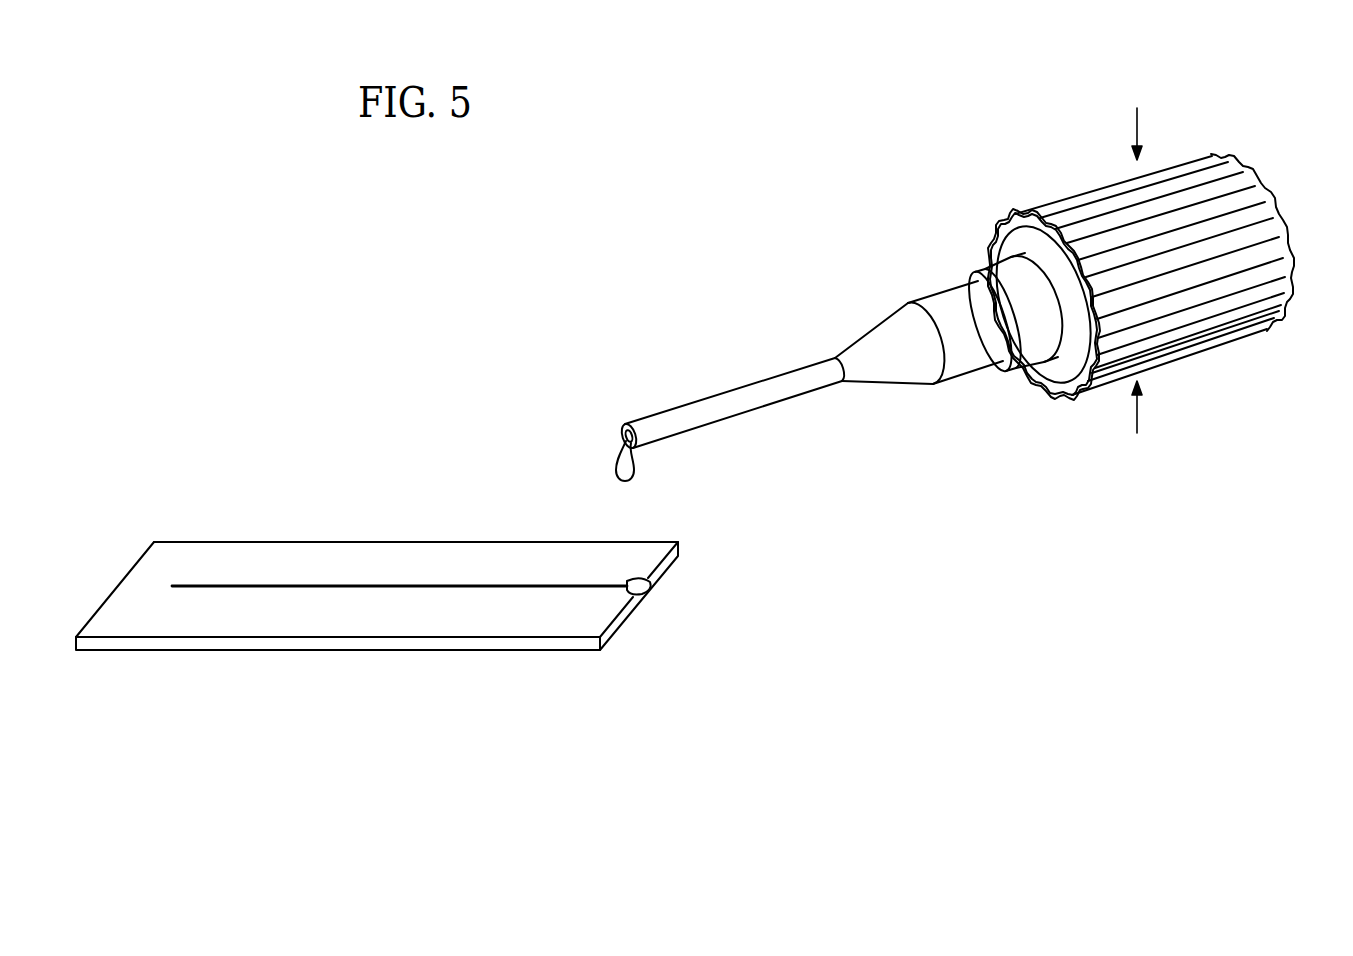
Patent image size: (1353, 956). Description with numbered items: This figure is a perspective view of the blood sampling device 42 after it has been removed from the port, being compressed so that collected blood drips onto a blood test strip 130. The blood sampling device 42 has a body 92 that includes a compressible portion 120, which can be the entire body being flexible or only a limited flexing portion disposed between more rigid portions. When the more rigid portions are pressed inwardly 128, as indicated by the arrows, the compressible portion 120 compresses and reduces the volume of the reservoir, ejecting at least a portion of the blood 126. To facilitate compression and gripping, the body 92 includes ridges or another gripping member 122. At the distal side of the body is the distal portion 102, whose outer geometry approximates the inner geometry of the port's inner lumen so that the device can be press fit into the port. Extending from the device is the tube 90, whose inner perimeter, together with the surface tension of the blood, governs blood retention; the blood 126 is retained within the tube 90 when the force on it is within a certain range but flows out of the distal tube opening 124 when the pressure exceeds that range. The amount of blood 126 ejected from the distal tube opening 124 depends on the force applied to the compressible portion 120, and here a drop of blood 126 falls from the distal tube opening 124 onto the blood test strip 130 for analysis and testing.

The blood sampling device 42 is at (1010, 268).
The tube 90 is at (758, 400).
The body 92 is at (1052, 218).
The distal portion 102 is at (967, 357).
The compressible portion 120 is at (1187, 313).
The gripping member 122 is at (1283, 228).
The distal tube opening 124 is at (622, 432).
The blood 126 is at (628, 467).
The inward pressing 128 is at (1137, 123).
The blood test strip 130 is at (262, 563).